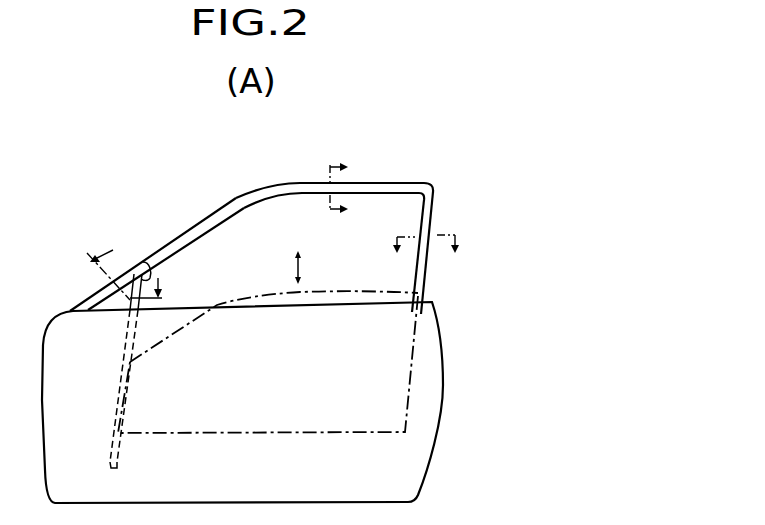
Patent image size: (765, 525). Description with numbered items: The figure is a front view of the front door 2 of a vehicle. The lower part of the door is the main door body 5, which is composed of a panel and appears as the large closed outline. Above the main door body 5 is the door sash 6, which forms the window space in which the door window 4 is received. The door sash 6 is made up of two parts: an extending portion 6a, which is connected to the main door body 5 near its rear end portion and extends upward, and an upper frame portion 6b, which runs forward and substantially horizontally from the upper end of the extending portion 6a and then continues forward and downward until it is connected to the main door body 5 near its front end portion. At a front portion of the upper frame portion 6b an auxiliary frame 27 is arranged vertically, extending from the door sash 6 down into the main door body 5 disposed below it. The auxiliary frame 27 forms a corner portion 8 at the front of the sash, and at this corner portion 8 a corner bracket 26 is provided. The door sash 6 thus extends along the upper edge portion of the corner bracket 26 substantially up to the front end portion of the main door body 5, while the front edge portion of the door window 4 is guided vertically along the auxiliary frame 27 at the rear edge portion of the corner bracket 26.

The front door 2 is at (157, 216).
The door window 4 is at (230, 232).
The main door body 5 is at (432, 348).
The door sash 6 is at (276, 213).
The extending portion 6a is at (424, 230).
The upper frame portion 6b is at (304, 182).
The corner portion 8 is at (92, 290).
The corner bracket 26 is at (118, 305).
The auxiliary frame 27 is at (143, 262).